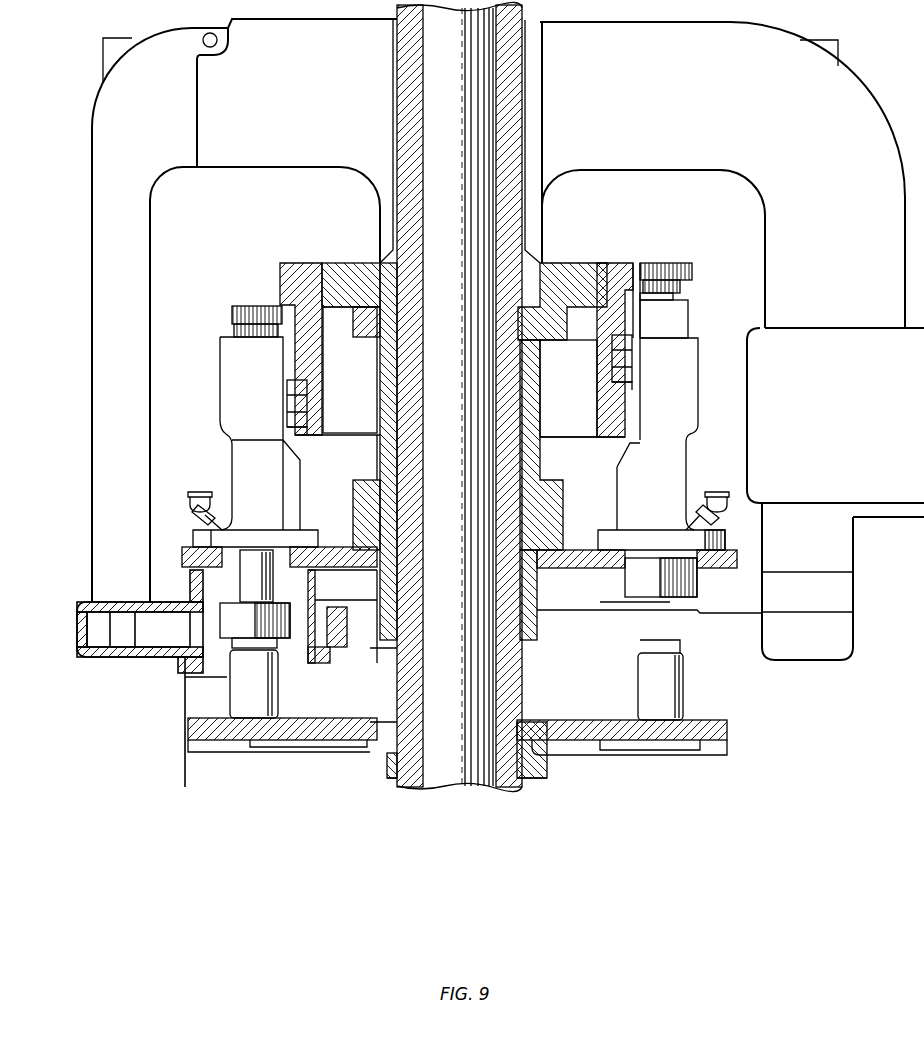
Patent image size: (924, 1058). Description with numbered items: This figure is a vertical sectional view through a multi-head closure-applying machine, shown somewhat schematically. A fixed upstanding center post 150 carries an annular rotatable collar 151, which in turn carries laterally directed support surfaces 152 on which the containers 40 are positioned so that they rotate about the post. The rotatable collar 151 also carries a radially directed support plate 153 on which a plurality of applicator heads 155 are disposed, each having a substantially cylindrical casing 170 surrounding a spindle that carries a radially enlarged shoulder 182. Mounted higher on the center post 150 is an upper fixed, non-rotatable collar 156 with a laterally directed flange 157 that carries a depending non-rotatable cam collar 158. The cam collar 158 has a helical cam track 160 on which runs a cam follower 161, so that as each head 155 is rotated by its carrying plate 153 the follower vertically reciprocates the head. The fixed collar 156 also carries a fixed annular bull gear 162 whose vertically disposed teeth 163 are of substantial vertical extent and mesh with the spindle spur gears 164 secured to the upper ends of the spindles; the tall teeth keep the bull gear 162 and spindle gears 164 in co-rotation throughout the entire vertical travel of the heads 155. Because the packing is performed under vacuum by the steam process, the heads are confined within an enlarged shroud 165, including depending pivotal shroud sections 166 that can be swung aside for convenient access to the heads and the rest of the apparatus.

The shroud 165 is at (842, 99).
The pivotal shroud sections 166 is at (103, 365).
The center post 150 is at (478, 700).
The upper fixed collar 156 is at (512, 146).
The rotatable collar 151 is at (408, 684).
The flange 157 is at (553, 270).
The bull gear 162 is at (617, 268).
The cam collar 158 is at (596, 326).
The teeth 163 is at (636, 306).
The spindle spur gear 164 is at (232, 318).
The casing 170 is at (683, 323).
The cam follower 161 is at (297, 394).
The helical cam track 160 is at (297, 432).
The applicator head 155 is at (218, 453).
The support plate 153 is at (738, 558).
The radially enlarged shoulder 182 is at (252, 587).
The container 40 is at (270, 698).
The support surfaces 152 is at (628, 700).